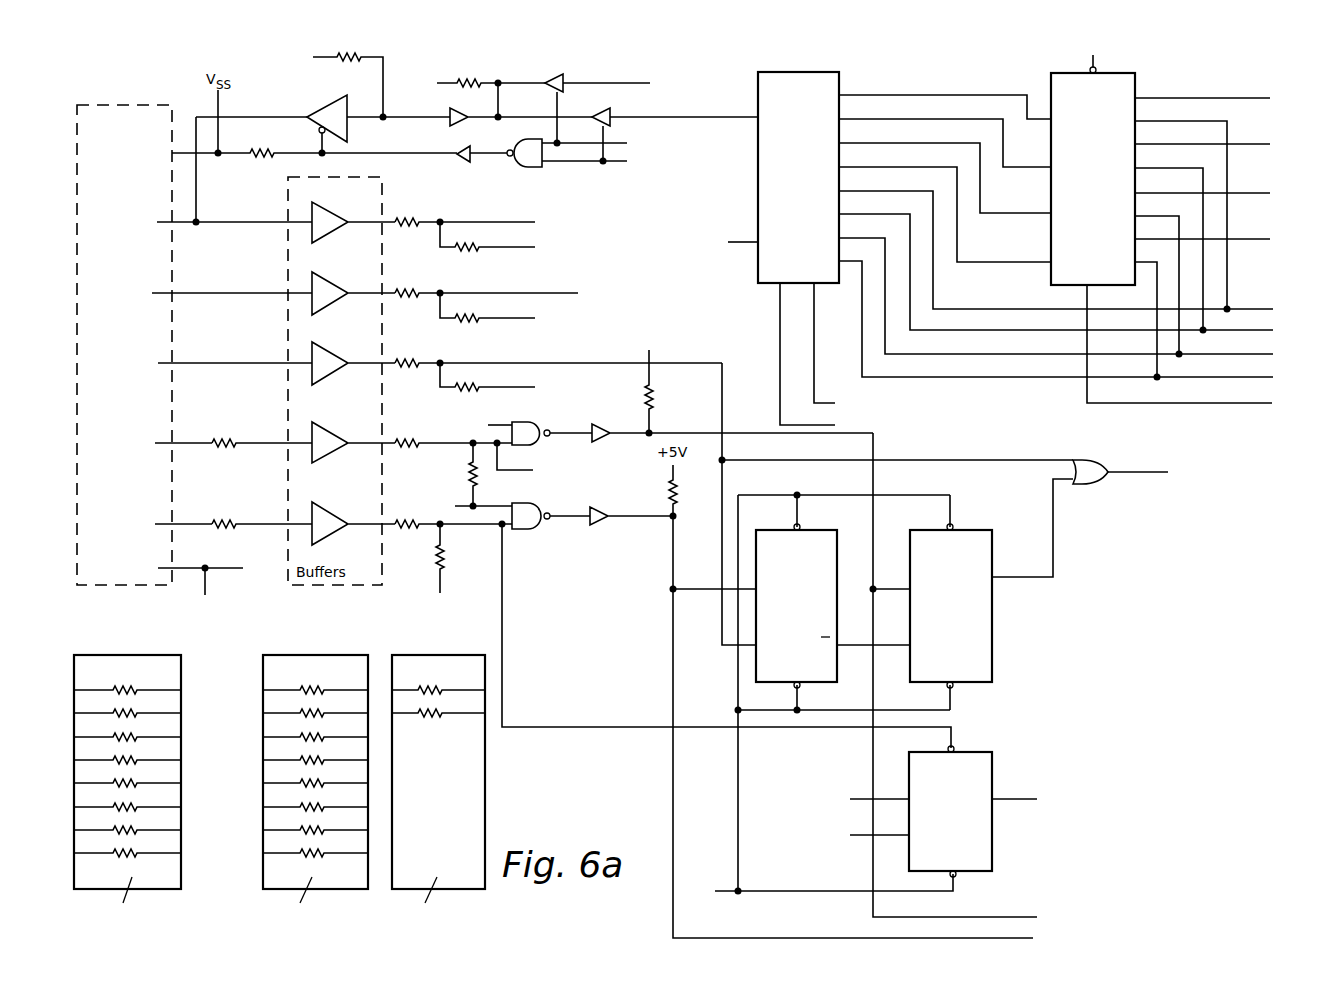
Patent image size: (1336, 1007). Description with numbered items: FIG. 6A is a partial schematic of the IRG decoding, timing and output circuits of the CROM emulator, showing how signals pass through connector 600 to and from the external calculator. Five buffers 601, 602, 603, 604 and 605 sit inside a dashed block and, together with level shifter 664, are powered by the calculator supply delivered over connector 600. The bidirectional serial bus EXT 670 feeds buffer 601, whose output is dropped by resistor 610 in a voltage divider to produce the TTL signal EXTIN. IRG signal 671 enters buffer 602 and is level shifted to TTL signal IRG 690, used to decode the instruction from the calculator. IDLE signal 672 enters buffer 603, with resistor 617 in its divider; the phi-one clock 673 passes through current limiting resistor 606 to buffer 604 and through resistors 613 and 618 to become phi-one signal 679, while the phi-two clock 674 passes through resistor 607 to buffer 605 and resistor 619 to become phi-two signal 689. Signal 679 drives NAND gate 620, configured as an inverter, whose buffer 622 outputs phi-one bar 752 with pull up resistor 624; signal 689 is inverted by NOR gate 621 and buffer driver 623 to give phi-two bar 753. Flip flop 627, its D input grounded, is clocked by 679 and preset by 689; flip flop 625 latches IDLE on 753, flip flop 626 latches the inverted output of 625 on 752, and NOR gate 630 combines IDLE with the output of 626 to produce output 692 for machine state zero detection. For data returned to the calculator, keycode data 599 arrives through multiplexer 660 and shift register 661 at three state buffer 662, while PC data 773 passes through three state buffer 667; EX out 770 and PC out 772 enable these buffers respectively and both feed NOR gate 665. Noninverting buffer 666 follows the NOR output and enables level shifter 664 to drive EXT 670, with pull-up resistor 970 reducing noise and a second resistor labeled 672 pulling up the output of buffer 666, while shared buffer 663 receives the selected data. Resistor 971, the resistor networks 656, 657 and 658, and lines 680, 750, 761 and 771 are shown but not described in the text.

The keycode data 599 is at (687, 124).
The connector 600 is at (159, 106).
The buffer 601 is at (298, 208).
The buffer 602 is at (290, 278).
The buffer 603 is at (288, 355).
The buffer 604 is at (334, 424).
The buffer 605 is at (338, 514).
The current limiting resistor 606 is at (239, 442).
The current limiting resistor 607 is at (239, 523).
The resistor 610 is at (406, 219).
The resistor 613 is at (401, 438).
The resistor 617 is at (482, 383).
The resistor 618 is at (468, 472).
The resistor 619 is at (444, 554).
The NAND gate 620 is at (531, 423).
The NOR gate 621 is at (530, 528).
The buffer 622 is at (610, 422).
The buffer driver 623 is at (602, 528).
The pull up resistor 624 is at (665, 383).
The flip flop 625 is at (832, 530).
The flip flop 626 is at (986, 530).
The D flip flop 627 is at (984, 752).
The NOR gate 630 is at (1104, 458).
The resistor network 656 is at (438, 655).
The resistor network 657 is at (312, 655).
The resistor network 658 is at (181, 671).
The multiplexer 660 is at (1136, 92).
The shift register 661 is at (840, 87).
The three state buffer 662 is at (606, 120).
The buffer 663 is at (444, 126).
The three state buffer 664 is at (303, 103).
The NOR gate 665 is at (516, 160).
The noninverting buffer 666 is at (456, 161).
The three state buffer 667 is at (560, 76).
The EXT signal 670 is at (158, 218).
The IRG signal 671 is at (166, 292).
The IDLE signal 672 is at (266, 146).
The phi-one clock signal 673 is at (166, 442).
The phi-two clock signal 674 is at (166, 522).
The phi-one signal 679 is at (852, 799).
The flip-flop output line 680 is at (1037, 799).
The phi-two signal 689 is at (579, 727).
The IRG signal 690 is at (544, 293).
The output of NOR gate 692 is at (1161, 471).
The shift register control line 750 is at (835, 425).
The phi-one bar signal 752 is at (1037, 917).
The phi-two bar signal 753 is at (1033, 938).
The FHMZ output line 761 is at (1248, 403).
The EX out signal 770 is at (627, 162).
The shift register control line 771 is at (835, 403).
The PC out signal 772 is at (640, 143).
The PC data 773 is at (635, 83).
The pull-up resistor 970 is at (465, 84).
The pull-up resistor 971 is at (353, 57).